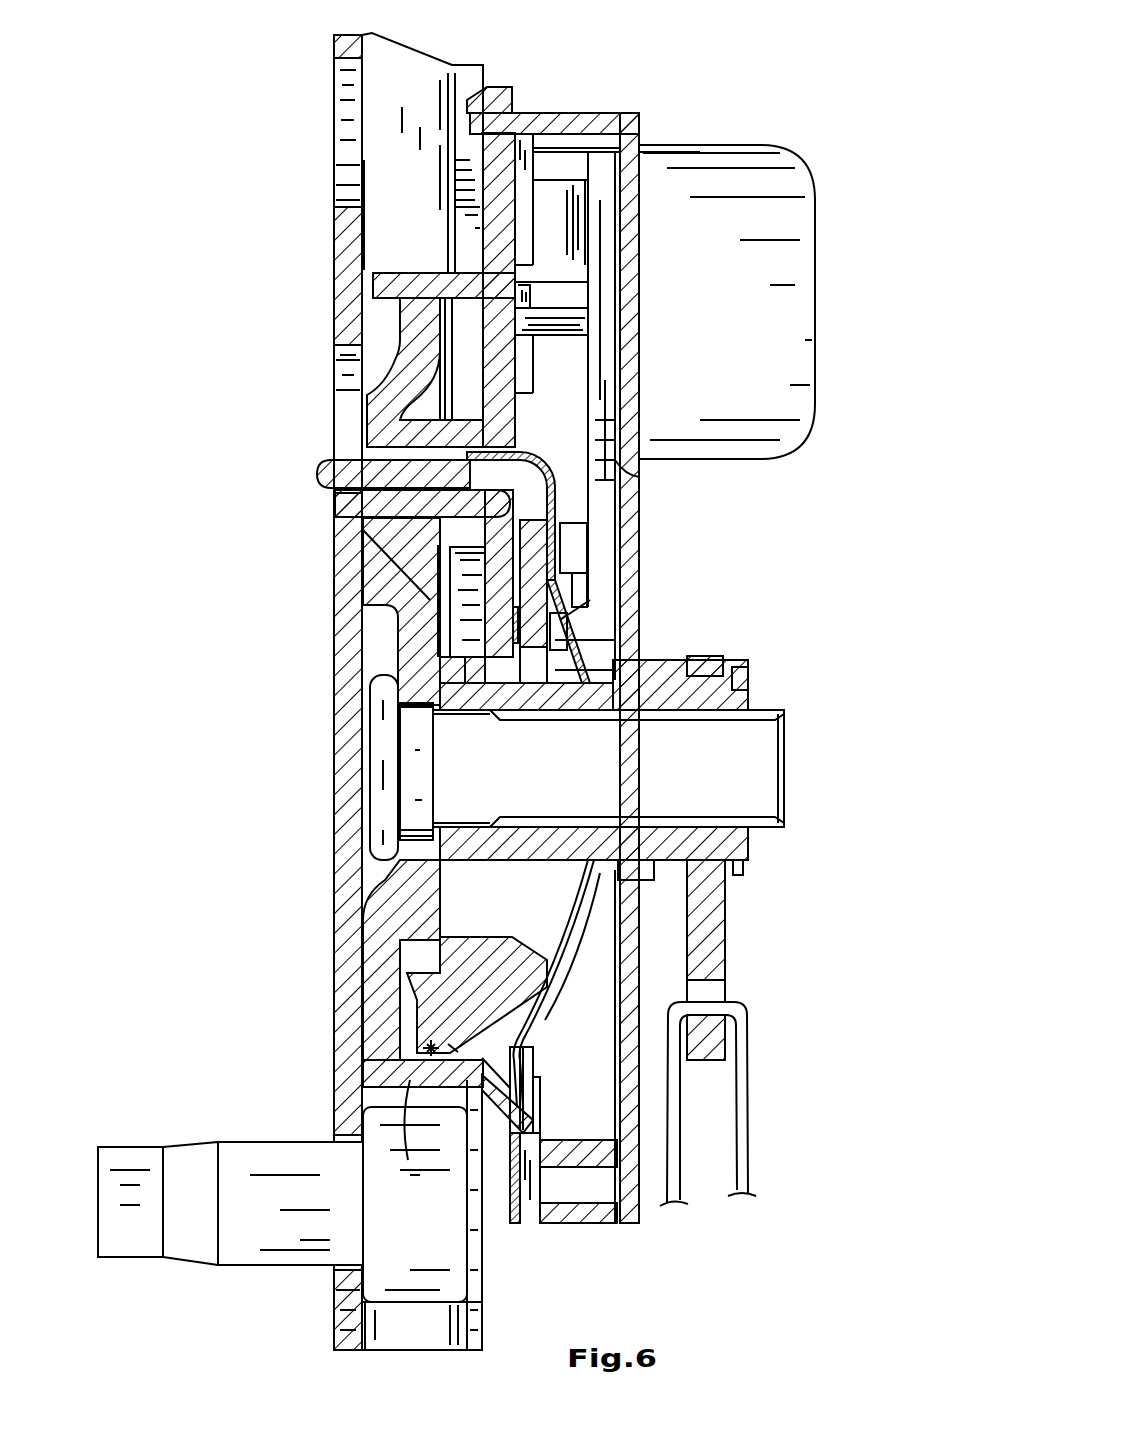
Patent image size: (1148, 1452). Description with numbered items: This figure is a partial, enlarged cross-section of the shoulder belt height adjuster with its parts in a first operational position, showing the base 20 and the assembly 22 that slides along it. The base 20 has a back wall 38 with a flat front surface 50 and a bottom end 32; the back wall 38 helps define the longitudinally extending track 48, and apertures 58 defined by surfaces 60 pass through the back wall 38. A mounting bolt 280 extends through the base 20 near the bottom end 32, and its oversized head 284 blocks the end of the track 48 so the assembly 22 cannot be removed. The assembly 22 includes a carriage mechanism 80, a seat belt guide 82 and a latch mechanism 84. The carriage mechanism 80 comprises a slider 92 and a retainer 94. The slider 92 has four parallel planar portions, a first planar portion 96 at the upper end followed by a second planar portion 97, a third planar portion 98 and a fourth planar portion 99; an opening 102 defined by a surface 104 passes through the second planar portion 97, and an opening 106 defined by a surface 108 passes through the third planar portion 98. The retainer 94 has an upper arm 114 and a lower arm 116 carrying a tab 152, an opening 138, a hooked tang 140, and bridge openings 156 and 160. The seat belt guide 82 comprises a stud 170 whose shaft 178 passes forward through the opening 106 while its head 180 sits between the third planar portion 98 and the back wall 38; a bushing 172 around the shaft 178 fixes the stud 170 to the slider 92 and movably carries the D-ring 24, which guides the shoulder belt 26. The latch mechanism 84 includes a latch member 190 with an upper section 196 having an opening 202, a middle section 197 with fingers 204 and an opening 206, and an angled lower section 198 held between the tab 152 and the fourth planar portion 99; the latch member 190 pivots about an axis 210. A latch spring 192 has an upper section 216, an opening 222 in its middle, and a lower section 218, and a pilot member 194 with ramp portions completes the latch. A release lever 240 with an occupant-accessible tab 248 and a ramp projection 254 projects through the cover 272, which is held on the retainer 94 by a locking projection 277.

The base 20 is at (332, 35).
The assembly 22 is at (780, 560).
The D-ring 24 is at (715, 935).
The shoulder belt 26 is at (748, 1150).
The bottom end 32 is at (440, 1352).
The back wall 38 is at (352, 262).
The track 48 is at (412, 80).
The front surface 50 is at (366, 215).
The apertures 58 is at (334, 107).
The surfaces 60 is at (345, 348).
The carriage mechanism 80 is at (432, 268).
The seat belt guide 82 is at (812, 852).
The latch mechanism 84 is at (700, 968).
The slider 92 is at (380, 585).
The retainer 94 is at (515, 410).
The first planar portion 96 is at (400, 322).
The second planar portion 97 is at (420, 560).
The third planar portion 98 is at (420, 660).
The fourth planar portion 99 is at (390, 975).
The opening 102 is at (380, 502).
The surface 104 is at (356, 460).
The opening 106 is at (408, 835).
The surface 108 is at (380, 745).
The upper arm 114 is at (386, 285).
The lower arm 116 is at (385, 1075).
The opening 138 is at (495, 148).
The tang 140 is at (537, 1120).
The tab 152 is at (462, 1050).
The opening 156 is at (400, 516).
The opening 160 is at (465, 695).
The stud 170 is at (770, 775).
The bushing 172 is at (730, 848).
The shaft 178 is at (760, 735).
The head 180 is at (405, 735).
The latch member 190 is at (535, 990).
The latch spring 192 is at (560, 918).
The pilot member 194 is at (580, 655).
The upper section 196 is at (320, 468).
The middle section 197 is at (556, 880).
The lower section 198 is at (440, 1000).
The opening 202 is at (452, 620).
The fingers 204 is at (560, 515).
The opening 206 is at (530, 710).
The axis 210 is at (425, 1132).
The upper section 216 is at (515, 455).
The lower section 218 is at (515, 1215).
The opening 222 is at (582, 690).
The release levers 240 is at (680, 145).
The tab 248 is at (800, 300).
The ramp projection 254 is at (560, 580).
The cover 272 is at (639, 463).
The locking projections 277 is at (480, 105).
The mounting bolts 280 is at (250, 1150).
The oversized head 284 is at (440, 1270).